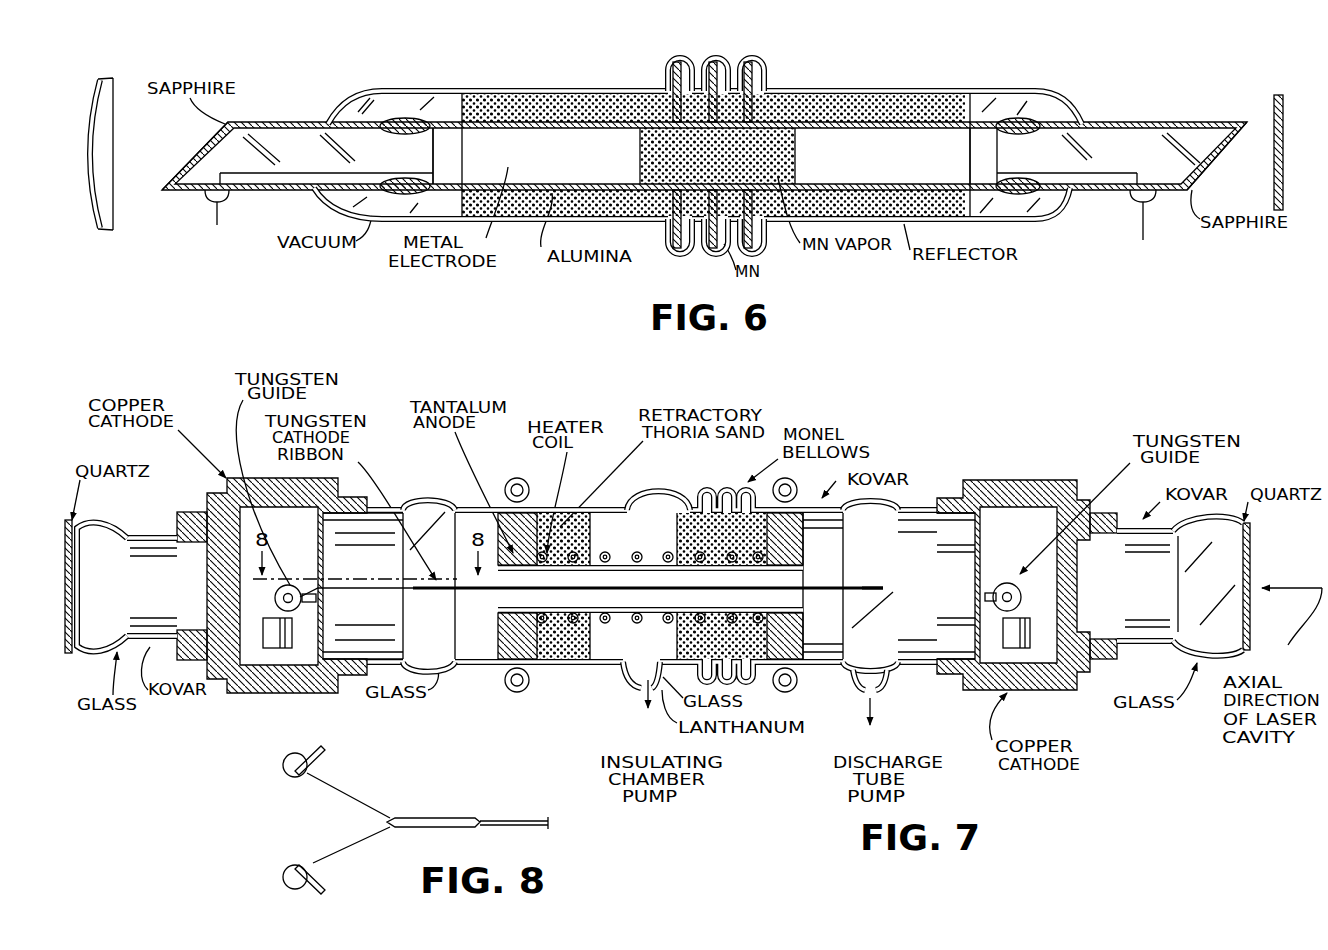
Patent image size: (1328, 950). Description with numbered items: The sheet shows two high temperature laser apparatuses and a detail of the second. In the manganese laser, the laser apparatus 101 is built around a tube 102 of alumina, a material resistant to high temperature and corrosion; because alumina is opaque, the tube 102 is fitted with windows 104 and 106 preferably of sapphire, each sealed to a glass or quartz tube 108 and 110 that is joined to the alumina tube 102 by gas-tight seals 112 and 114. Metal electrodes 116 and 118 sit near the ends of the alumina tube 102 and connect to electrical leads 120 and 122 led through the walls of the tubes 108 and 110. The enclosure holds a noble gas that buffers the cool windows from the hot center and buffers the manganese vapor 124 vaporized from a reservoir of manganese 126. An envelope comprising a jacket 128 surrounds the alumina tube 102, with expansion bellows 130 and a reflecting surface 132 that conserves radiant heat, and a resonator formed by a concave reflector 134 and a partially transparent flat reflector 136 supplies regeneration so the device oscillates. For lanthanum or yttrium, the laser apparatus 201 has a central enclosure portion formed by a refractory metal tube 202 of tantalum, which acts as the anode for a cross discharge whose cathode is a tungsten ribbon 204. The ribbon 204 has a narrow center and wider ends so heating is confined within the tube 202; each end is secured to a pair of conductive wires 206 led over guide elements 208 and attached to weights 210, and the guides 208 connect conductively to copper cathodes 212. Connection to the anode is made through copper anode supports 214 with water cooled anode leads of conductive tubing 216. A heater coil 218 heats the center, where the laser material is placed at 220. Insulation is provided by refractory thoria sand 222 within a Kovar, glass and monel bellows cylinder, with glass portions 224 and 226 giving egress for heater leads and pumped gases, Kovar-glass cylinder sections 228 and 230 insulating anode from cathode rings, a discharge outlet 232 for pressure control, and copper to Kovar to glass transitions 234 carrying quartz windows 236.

In FIG. 6, the laser apparatus 101 is at (986, 89).
In FIG. 6, the tube 102 is at (572, 192).
In FIG. 6, the window 104 is at (198, 158).
In FIG. 6, the window 106 is at (1216, 162).
In FIG. 6, the glass or quartz tube 108 is at (283, 191).
In FIG. 6, the glass or quartz tube 110 is at (1118, 196).
In FIG. 6, the gas-tight seal 112 is at (400, 120).
In FIG. 6, the gas-tight seal 114 is at (1015, 122).
In FIG. 6, the metal electrode 116 is at (578, 165).
In FIG. 6, the metal electrode 118 is at (900, 165).
In FIG. 6, the electrical lead 120 is at (299, 172).
In FIG. 6, the electrical lead 122 is at (1098, 175).
In FIG. 6, the manganese vapor 124 is at (735, 165).
In FIG. 6, the reservoir of manganese 126 is at (704, 246).
In FIG. 6, the jacket 128 is at (884, 88).
In FIG. 6, the expansion bellows 130 is at (770, 80).
In FIG. 6, the reflecting surface 132 is at (571, 73).
In FIG. 6, the concave reflector 134 is at (111, 206).
In FIG. 6, the partially transparent flat reflector 136 is at (1272, 108).
In FIG. 7, the laser apparatus 201 is at (560, 660).
In FIG. 7, the refractory metal tube 202 is at (789, 583).
In FIG. 7, the tungsten ribbon 204 is at (473, 595).
In FIG. 8, the tungsten ribbon 204 is at (478, 816).
In FIG. 7, the conductive wires 206 is at (389, 590).
In FIG. 8, the conductive wires 206 is at (356, 794).
In FIG. 7, the guide elements 208 is at (308, 604).
In FIG. 8, the guide elements 208 is at (321, 768).
In FIG. 7, the weights 210 is at (277, 648).
In FIG. 8, the weights 210 is at (286, 770).
In FIG. 7, the copper cathodes 212 is at (257, 692).
In FIG. 7, the copper anode supports 214 is at (560, 508).
In FIG. 7, the anode leads of conductive tubing 216 is at (516, 693).
In FIG. 7, the heater coil 218 is at (782, 616).
In FIG. 7, the laser material location 220 is at (647, 598).
In FIG. 7, the refractory thoria sand 222 is at (574, 663).
In FIG. 7, the glass portion 224 is at (632, 492).
In FIG. 7, the glass portion 226 is at (648, 675).
In FIG. 7, the Kovar-glass cylinder section 228 is at (456, 665).
In FIG. 7, the Kovar-glass cylinder section 230 is at (908, 530).
In FIG. 7, the discharge outlet 232 is at (887, 678).
In FIG. 7, the copper to Kovar to glass transitions 234 is at (152, 532).
In FIG. 7, the windows 236 is at (67, 652).